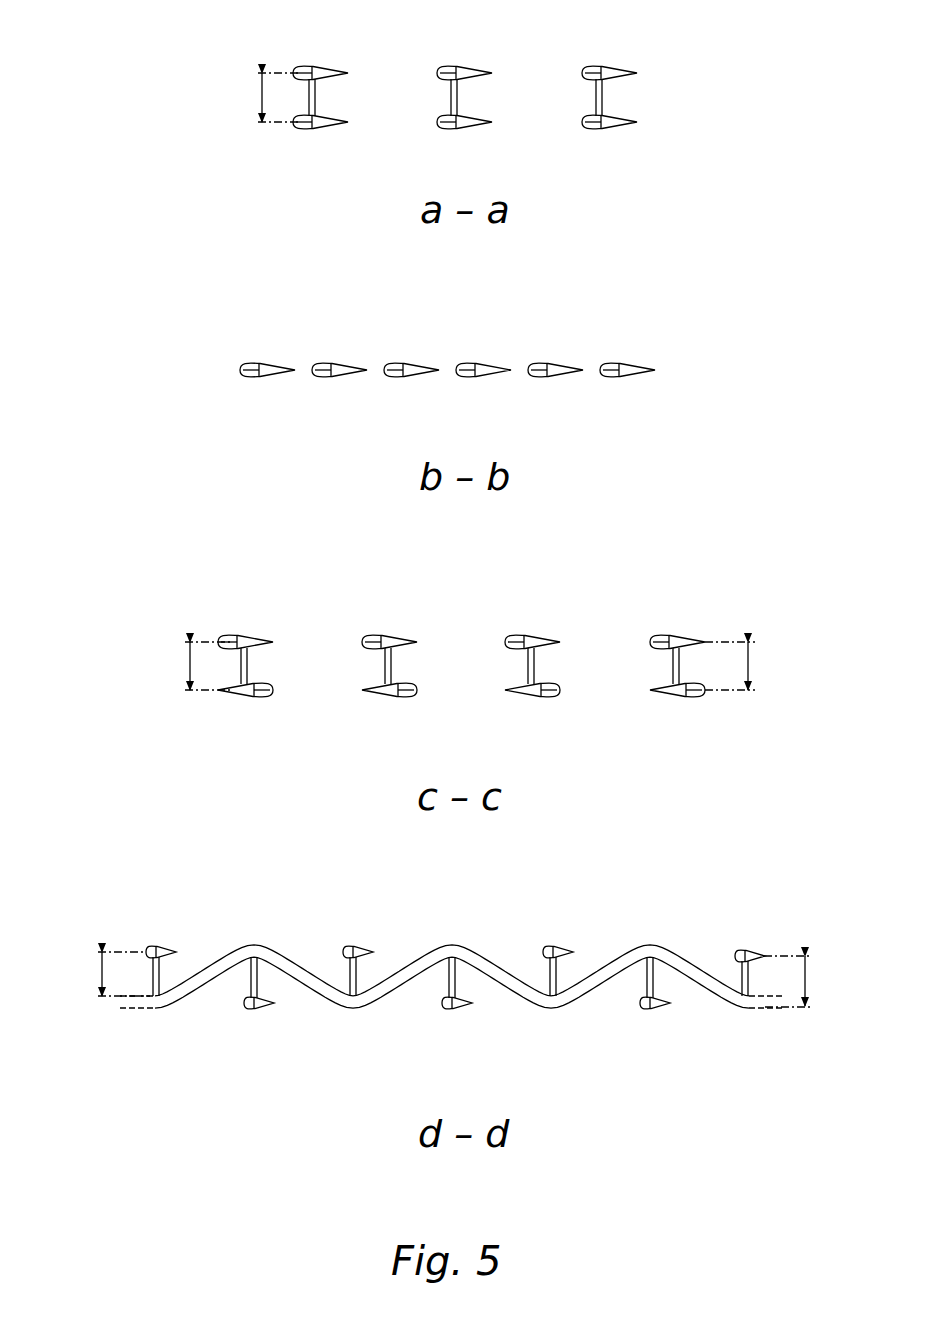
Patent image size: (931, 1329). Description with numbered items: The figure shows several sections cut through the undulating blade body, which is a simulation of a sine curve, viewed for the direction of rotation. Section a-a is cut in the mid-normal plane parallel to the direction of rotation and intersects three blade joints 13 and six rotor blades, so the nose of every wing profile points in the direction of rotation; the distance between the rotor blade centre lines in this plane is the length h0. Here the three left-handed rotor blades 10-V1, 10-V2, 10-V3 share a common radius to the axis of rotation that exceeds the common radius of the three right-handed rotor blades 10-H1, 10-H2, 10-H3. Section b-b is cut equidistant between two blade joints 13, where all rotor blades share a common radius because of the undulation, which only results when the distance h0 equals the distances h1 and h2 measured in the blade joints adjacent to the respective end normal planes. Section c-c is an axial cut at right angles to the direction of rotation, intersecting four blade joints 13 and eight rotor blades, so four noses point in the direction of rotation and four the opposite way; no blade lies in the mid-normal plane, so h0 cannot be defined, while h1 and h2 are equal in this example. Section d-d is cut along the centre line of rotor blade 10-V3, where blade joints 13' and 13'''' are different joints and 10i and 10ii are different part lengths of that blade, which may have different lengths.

The left-handed rotor blade 10-V1 is at (604, 57).
The left-handed rotor blade 10-V2 is at (313, 58).
The left-handed rotor blade 10-V3 is at (461, 57).
The right-handed rotor blade 10-H1 is at (606, 139).
The right-handed rotor blade 10-H2 is at (319, 139).
The right-handed rotor blade 10-H3 is at (462, 139).
The blade joint 13 is at (482, 383).
The blade joint 13' is at (194, 1002).
The blade joint 13'''' is at (804, 1022).
The part length of rotor blade 10i is at (140, 1012).
The part length of rotor blade 10ii is at (780, 1019).
The distance between rotor blade centre lines in mid-normal plane h0 is at (259, 97).
The distance between rotor blade centre lines at blade joint h1 is at (145, 819).
The distance between rotor blade centre lines at blade joint h2 is at (775, 824).